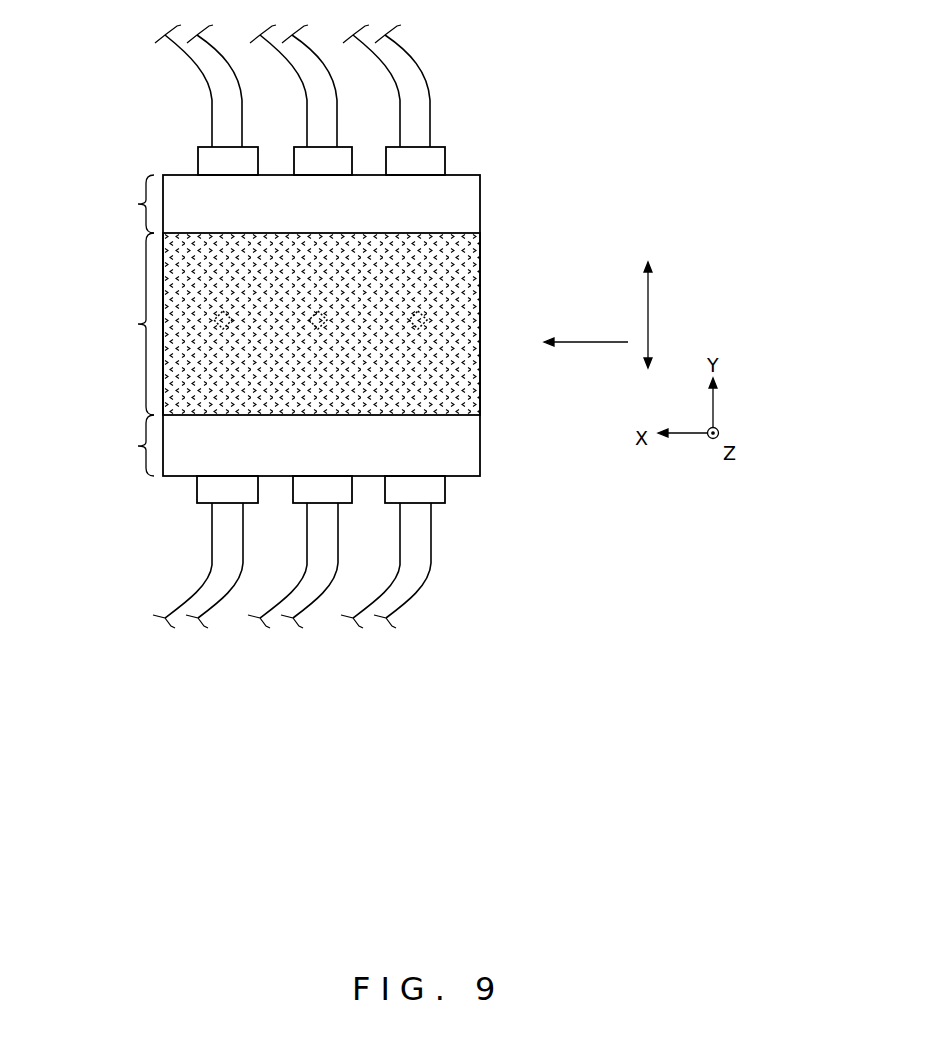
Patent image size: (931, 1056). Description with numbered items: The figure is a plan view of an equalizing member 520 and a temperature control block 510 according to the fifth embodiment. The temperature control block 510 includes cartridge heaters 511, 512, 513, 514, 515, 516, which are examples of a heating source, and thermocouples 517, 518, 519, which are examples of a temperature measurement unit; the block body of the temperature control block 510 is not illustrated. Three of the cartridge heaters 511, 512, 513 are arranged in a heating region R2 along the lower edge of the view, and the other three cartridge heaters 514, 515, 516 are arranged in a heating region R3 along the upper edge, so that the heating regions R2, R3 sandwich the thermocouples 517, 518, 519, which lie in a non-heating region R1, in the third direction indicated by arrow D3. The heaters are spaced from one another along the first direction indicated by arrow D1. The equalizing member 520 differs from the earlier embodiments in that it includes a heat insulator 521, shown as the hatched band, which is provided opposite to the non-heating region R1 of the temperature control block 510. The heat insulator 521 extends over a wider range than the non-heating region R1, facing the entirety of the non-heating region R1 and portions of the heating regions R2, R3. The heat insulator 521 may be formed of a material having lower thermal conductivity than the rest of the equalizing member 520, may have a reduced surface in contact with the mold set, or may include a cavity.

The temperature control block 510 is at (194, 508).
The cartridge heater 511 is at (184, 509).
The cartridge heater 512 is at (397, 527).
The cartridge heater 513 is at (459, 512).
The cartridge heater 514 is at (185, 100).
The cartridge heater 515 is at (301, 100).
The cartridge heater 516 is at (394, 100).
The thermocouple 517 is at (167, 305).
The thermocouple 518 is at (212, 293).
The thermocouple 519 is at (481, 323).
The equalizing member 520 is at (495, 306).
The heat insulator 521 is at (356, 316).
The non-heating region R1 is at (128, 324).
The heating region R2 is at (128, 445).
The heating region R3 is at (128, 204).
The first direction D1 is at (585, 400).
The third direction D3 is at (688, 315).